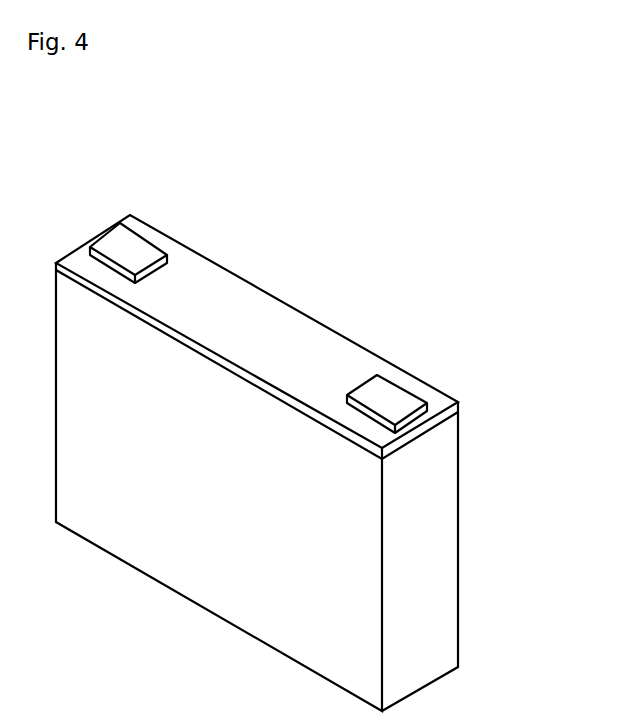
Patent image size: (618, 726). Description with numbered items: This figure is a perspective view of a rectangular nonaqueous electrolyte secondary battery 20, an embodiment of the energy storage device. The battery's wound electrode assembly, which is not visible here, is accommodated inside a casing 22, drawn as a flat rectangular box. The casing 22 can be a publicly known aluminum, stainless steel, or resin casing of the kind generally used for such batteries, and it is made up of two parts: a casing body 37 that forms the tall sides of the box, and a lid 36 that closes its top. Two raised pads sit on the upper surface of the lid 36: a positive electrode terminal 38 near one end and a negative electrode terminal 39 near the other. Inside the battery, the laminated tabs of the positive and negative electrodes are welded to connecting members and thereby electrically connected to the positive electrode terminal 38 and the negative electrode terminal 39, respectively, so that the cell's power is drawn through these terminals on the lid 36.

The nonaqueous electrolyte secondary battery 20 is at (293, 212).
The casing 22 is at (435, 585).
The lid 36 is at (462, 421).
The casing body 37 is at (435, 455).
The positive electrode terminal 38 is at (145, 253).
The negative electrode terminal 39 is at (395, 398).